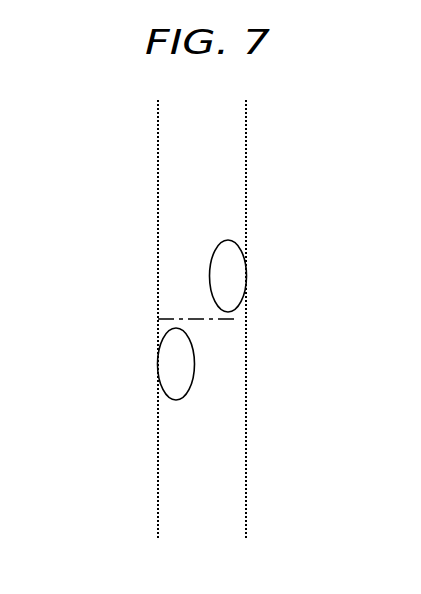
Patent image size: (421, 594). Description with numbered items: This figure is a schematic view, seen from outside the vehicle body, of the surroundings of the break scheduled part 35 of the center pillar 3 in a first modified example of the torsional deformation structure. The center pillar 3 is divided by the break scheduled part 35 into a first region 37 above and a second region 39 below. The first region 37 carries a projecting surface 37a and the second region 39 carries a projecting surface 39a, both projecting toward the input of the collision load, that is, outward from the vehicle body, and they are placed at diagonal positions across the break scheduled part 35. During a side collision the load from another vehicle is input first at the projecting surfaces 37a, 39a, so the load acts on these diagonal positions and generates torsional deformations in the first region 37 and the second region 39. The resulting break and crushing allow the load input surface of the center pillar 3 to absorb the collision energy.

The center pillar 3 is at (143, 215).
The break scheduled part 35 is at (242, 317).
The first region 37 is at (230, 224).
The projecting surface 37a is at (235, 273).
The second region 39 is at (226, 392).
The projecting surface 39a is at (178, 356).